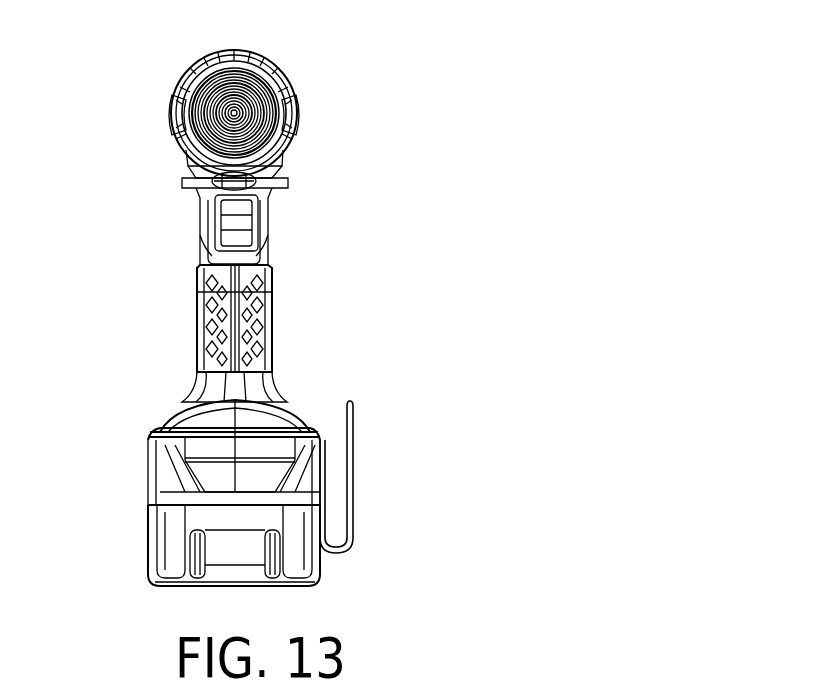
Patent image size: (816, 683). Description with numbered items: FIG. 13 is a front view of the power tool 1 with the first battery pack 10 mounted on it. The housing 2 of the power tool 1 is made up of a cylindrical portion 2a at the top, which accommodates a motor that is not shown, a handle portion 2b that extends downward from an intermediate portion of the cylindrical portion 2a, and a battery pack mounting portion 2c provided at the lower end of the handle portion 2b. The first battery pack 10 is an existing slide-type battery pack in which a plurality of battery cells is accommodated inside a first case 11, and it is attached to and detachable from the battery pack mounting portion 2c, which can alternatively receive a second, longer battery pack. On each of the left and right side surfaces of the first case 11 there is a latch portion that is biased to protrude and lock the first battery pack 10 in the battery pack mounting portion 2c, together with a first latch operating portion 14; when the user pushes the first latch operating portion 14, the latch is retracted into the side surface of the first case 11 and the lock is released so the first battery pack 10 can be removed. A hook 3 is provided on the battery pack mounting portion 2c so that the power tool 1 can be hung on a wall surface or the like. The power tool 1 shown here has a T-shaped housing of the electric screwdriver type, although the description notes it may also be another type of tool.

The power tool 1 is at (376, 317).
The housing 2 is at (282, 296).
The cylindrical portion 2a is at (228, 52).
The handle portion 2b is at (197, 316).
The battery pack mounting portion 2c is at (150, 435).
The hook 3 is at (354, 420).
The first battery pack 10 is at (150, 560).
The first case 11 is at (148, 525).
The first latch operating portion 14 is at (147, 470).